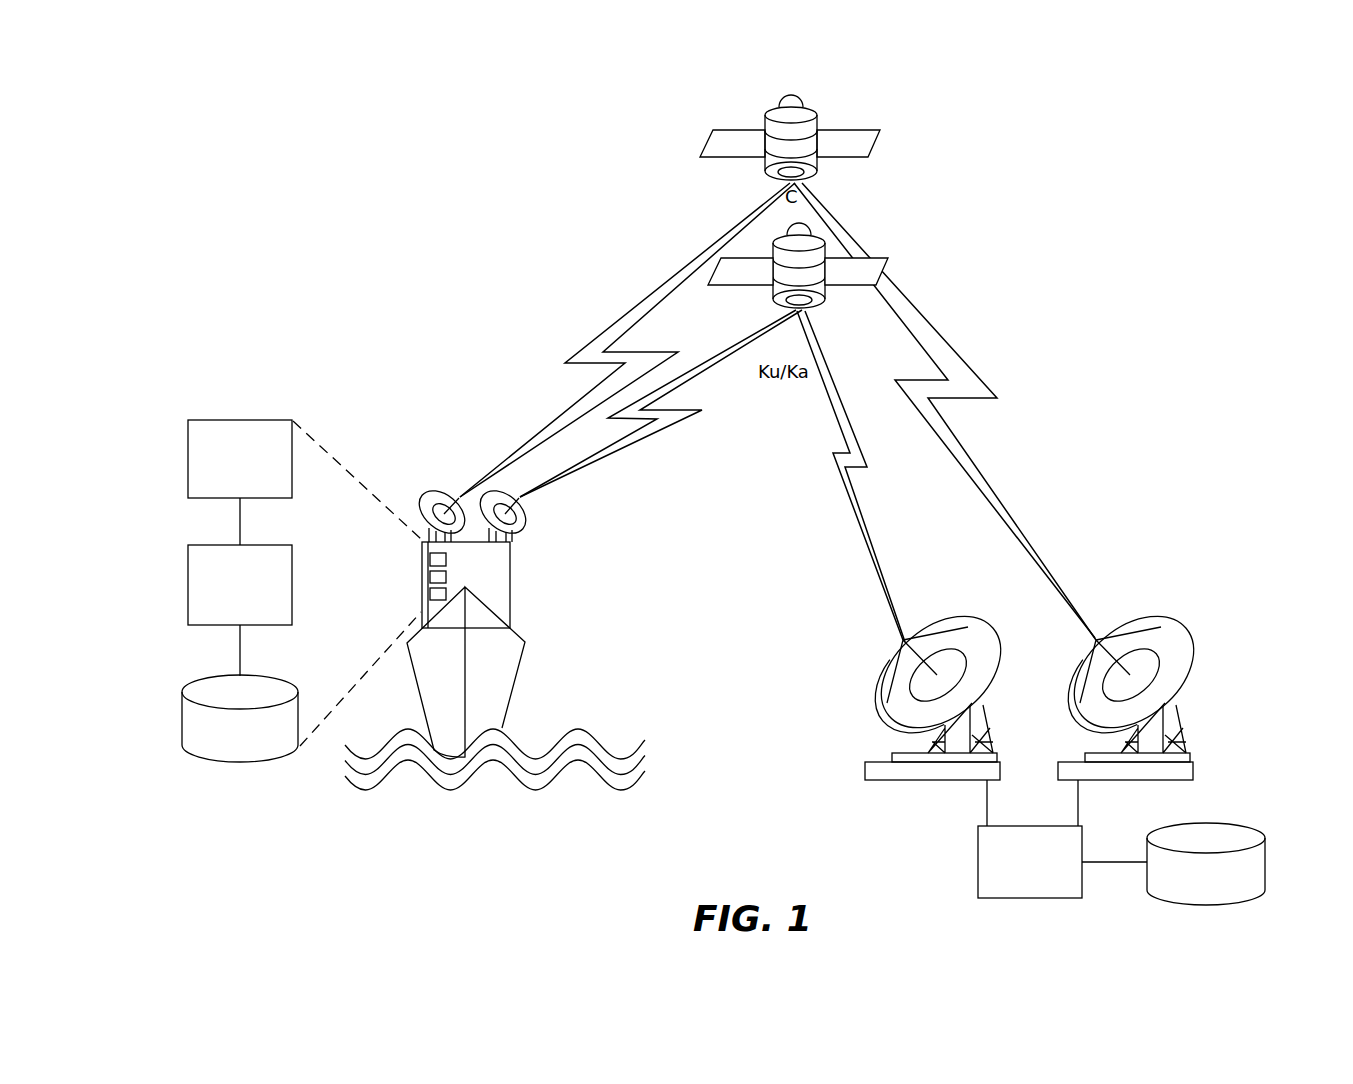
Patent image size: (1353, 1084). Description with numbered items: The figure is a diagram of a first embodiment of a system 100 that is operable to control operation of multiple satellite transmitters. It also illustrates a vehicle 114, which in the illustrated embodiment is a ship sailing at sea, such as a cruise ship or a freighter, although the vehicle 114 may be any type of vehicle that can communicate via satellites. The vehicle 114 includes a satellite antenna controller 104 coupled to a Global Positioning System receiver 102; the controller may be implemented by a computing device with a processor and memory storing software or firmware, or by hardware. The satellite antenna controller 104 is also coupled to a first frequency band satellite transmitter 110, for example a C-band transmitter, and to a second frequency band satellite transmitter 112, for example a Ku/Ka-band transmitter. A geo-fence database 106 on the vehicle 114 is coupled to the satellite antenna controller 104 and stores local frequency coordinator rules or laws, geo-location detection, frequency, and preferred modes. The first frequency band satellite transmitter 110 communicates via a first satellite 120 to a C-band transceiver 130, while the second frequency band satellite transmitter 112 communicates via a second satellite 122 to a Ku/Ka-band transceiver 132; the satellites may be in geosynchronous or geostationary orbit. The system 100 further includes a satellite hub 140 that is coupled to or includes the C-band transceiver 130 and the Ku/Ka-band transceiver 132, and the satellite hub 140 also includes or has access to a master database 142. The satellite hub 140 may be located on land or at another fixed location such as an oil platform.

The system 100 is at (172, 104).
The Global Positioning System (GPS) receiver 102 is at (226, 420).
The satellite antenna controller 104 is at (226, 545).
The geo-fence database 106 is at (226, 677).
The first frequency band satellite transmitter 110 is at (430, 492).
The second frequency band satellite transmitter 112 is at (527, 518).
The vehicle 114 is at (522, 632).
The first satellite 120 is at (868, 128).
The second satellite 122 is at (878, 258).
The C-band transceiver 130 is at (1195, 761).
The Ku/Ka-band transceiver 132 is at (873, 761).
The satellite hub 140 is at (978, 860).
The master database 142 is at (1201, 823).